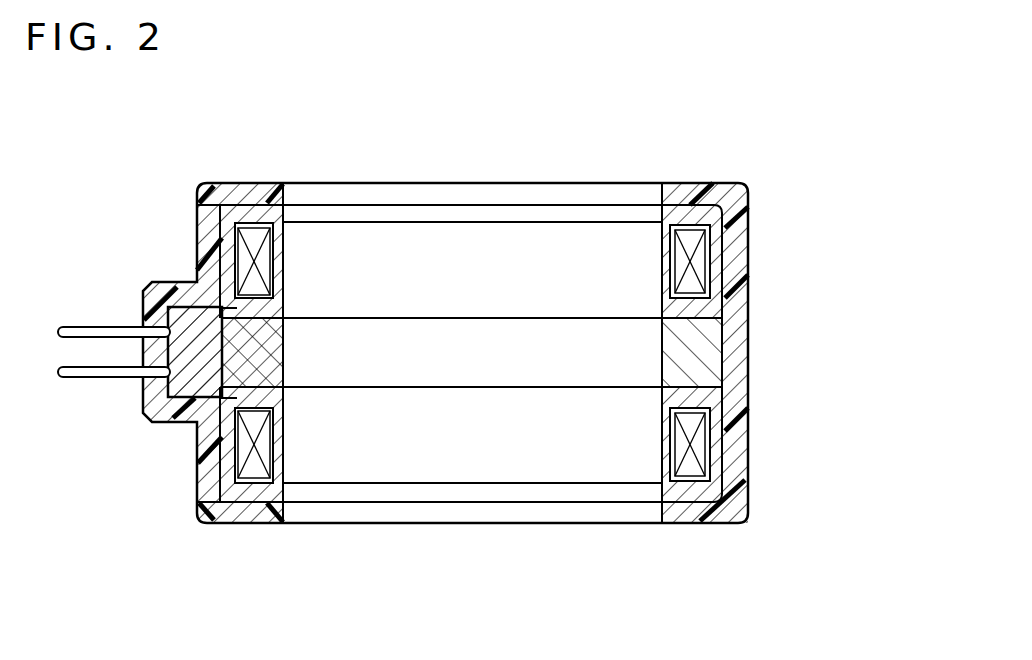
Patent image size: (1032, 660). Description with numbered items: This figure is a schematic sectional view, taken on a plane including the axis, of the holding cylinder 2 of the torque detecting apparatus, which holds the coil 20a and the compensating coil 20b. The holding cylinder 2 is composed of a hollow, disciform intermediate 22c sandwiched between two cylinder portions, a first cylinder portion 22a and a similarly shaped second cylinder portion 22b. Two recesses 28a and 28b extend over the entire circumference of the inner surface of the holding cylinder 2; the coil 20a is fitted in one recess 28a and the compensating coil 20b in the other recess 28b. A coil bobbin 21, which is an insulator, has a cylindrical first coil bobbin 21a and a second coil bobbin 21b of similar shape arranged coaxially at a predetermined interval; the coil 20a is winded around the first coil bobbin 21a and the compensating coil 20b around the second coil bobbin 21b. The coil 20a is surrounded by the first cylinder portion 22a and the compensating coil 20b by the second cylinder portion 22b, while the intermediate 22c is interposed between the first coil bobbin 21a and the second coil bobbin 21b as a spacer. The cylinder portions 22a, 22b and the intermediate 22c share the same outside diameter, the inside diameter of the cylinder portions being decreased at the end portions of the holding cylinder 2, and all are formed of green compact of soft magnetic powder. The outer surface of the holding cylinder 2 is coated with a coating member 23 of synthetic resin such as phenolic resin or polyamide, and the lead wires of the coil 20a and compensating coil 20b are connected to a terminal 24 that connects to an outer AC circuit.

The holding cylinder 2 is at (160, 143).
The coil 20a is at (237, 453).
The compensating coil 20b is at (218, 248).
The coil bobbin 21 is at (584, 352).
The first coil bobbin 21a is at (287, 452).
The second coil bobbin 21b is at (280, 247).
The first cylinder portion 22a is at (717, 458).
The second cylinder portion 22b is at (718, 252).
The intermediate 22c is at (662, 372).
The coating member 23 is at (692, 190).
The terminal 24 is at (115, 380).
The recess 28a is at (728, 485).
The recess 28b is at (724, 208).